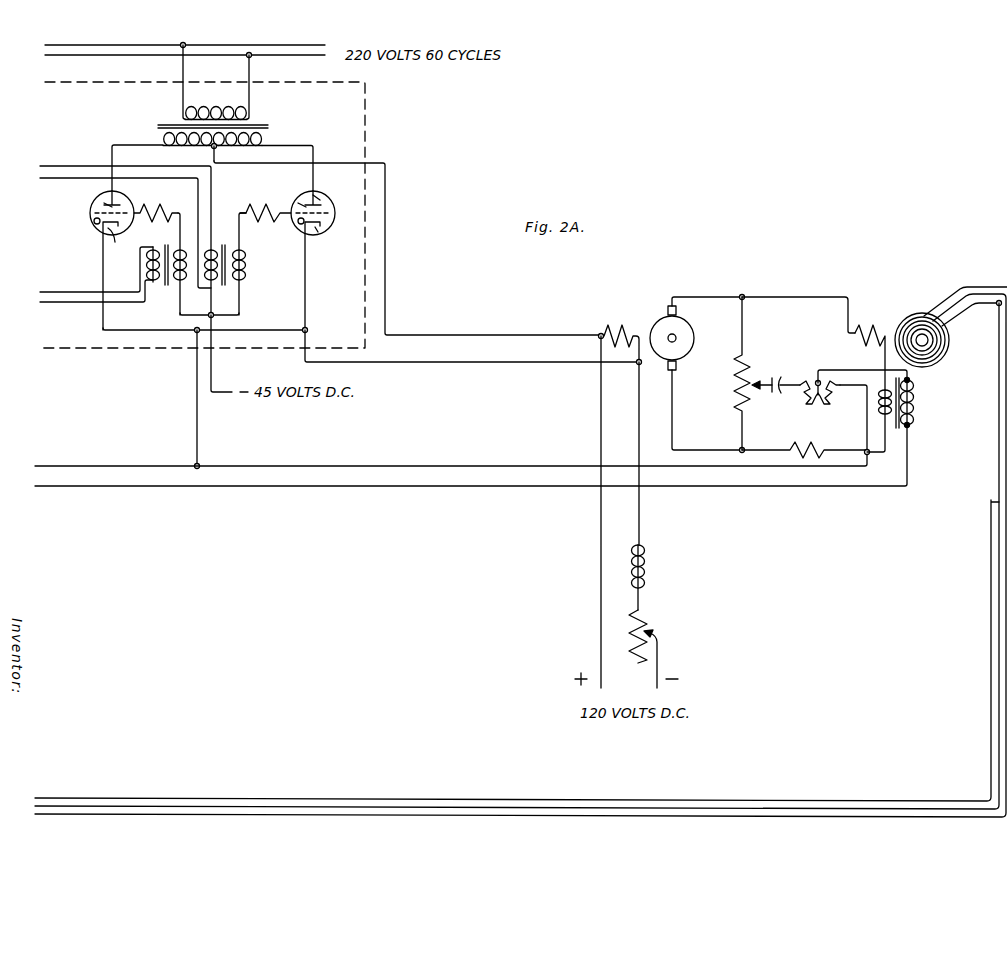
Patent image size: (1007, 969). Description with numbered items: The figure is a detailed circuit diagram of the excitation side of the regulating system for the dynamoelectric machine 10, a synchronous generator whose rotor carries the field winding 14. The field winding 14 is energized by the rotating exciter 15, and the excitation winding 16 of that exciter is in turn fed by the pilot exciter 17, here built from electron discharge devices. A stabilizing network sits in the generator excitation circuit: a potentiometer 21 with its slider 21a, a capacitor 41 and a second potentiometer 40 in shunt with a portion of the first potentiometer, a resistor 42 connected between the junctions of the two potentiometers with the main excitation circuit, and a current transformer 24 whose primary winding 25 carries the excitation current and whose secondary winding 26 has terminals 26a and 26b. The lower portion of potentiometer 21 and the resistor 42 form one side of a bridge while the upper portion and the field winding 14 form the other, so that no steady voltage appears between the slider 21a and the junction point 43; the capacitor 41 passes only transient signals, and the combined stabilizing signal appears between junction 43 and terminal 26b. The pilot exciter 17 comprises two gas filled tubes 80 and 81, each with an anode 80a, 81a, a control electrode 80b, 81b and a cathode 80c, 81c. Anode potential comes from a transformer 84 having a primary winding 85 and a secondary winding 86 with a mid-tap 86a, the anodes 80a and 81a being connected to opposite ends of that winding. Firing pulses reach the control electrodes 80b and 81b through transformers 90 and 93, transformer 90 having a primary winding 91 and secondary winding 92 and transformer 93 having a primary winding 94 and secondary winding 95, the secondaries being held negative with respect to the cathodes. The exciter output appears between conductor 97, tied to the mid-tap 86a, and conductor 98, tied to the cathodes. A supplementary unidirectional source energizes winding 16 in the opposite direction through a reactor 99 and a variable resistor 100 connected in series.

The dynamoelectric machine 10 is at (948, 349).
The field winding 14 is at (862, 328).
The rotating exciter 15 is at (694, 333).
The excitation winding 16 is at (616, 331).
The pilot exciter 17 is at (299, 86).
The potentiometer 21 is at (738, 386).
The slider 21a is at (768, 398).
The current transformer 24 is at (909, 430).
The primary winding 25 is at (877, 409).
The secondary winding 26 is at (915, 403).
The secondary winding terminal 26a is at (913, 381).
The secondary winding terminal 26b is at (913, 425).
The second potentiometer 40 is at (820, 403).
The capacitor 41 is at (777, 379).
The resistor 42 is at (797, 447).
The junction point 43 is at (870, 455).
The electron discharge device 80 is at (90, 212).
The anode 80a is at (105, 203).
The control electrode 80b is at (131, 205).
The cathode 80c is at (123, 242).
The electron discharge device 81 is at (330, 208).
The anode 81a is at (320, 200).
The control electrode 81b is at (298, 203).
The cathode 81c is at (315, 228).
The transformer 84 is at (270, 126).
The primary winding 85 is at (183, 114).
The secondary winding 86 is at (163, 143).
The mid-tap 86a is at (211, 148).
The transformer 90 is at (166, 277).
The primary winding 91 is at (146, 263).
The secondary winding 92 is at (178, 247).
The transformer 93 is at (227, 242).
The primary winding 94 is at (210, 283).
The secondary winding 95 is at (246, 266).
The conductor 97 is at (387, 187).
The conductor 98 is at (493, 363).
The reactor 99 is at (645, 567).
The variable resistor 100 is at (650, 619).